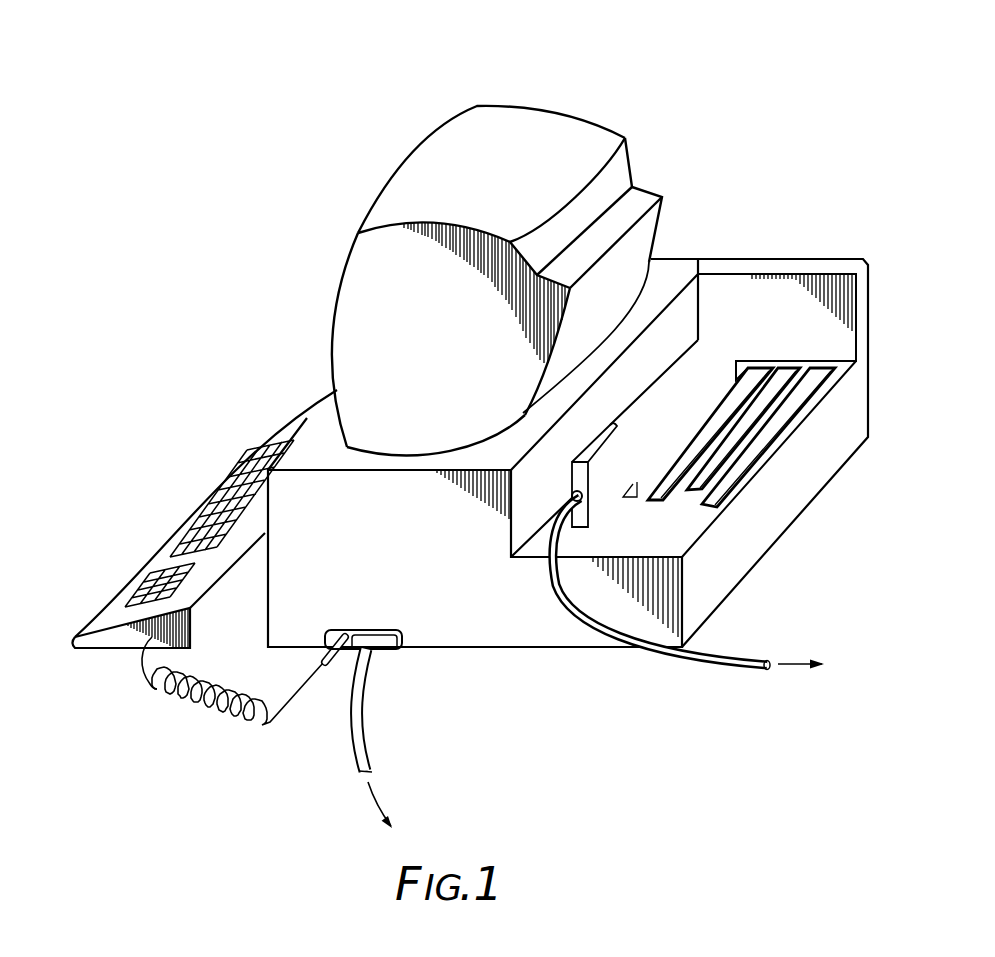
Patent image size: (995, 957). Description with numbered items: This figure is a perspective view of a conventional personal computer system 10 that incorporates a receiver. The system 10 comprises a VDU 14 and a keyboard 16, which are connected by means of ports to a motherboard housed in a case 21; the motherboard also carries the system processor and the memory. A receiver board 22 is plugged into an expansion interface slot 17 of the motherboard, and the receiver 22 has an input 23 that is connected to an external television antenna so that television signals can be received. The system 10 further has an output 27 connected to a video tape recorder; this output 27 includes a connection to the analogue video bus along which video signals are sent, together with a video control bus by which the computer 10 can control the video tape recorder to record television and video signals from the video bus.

The personal computer system 10 is at (345, 250).
The VDU 14 is at (528, 132).
The keyboard 16 is at (212, 500).
The expansion interface slot 17 is at (828, 367).
The case 21 is at (543, 613).
The receiver board 22 is at (713, 322).
The input 23 is at (738, 662).
The output 27 is at (362, 708).